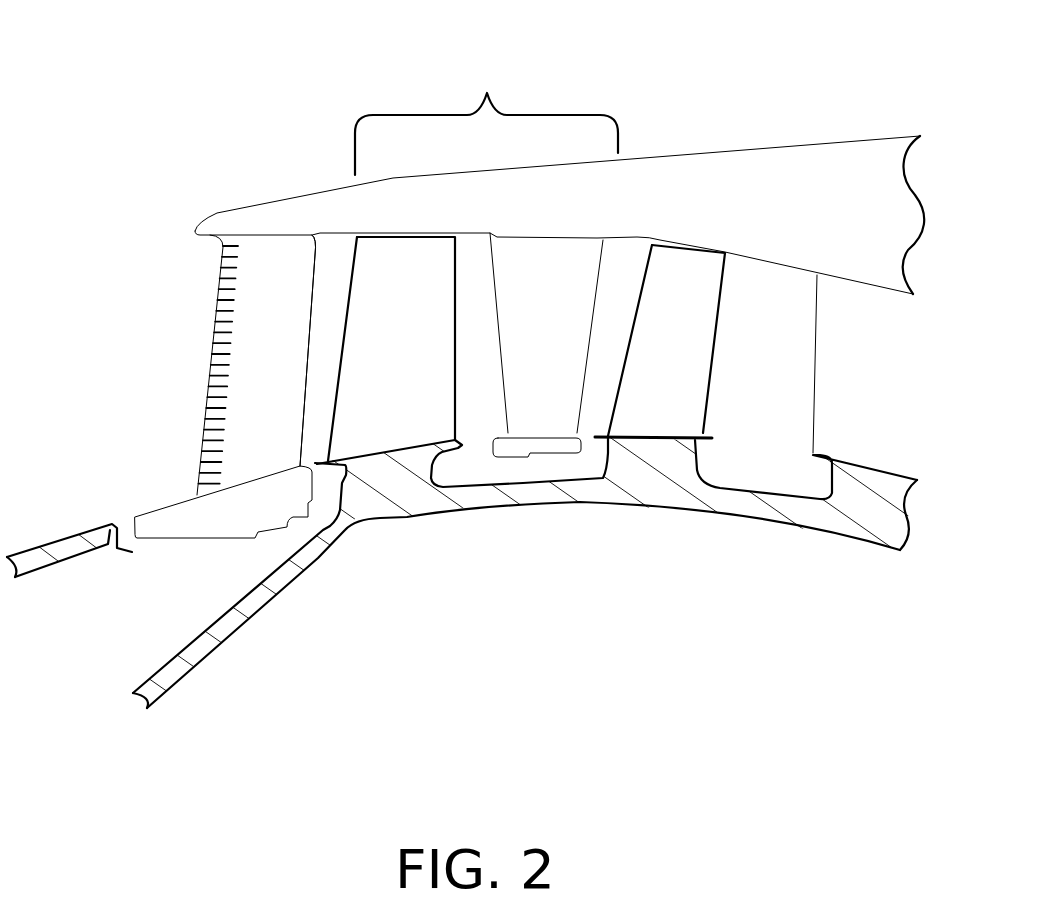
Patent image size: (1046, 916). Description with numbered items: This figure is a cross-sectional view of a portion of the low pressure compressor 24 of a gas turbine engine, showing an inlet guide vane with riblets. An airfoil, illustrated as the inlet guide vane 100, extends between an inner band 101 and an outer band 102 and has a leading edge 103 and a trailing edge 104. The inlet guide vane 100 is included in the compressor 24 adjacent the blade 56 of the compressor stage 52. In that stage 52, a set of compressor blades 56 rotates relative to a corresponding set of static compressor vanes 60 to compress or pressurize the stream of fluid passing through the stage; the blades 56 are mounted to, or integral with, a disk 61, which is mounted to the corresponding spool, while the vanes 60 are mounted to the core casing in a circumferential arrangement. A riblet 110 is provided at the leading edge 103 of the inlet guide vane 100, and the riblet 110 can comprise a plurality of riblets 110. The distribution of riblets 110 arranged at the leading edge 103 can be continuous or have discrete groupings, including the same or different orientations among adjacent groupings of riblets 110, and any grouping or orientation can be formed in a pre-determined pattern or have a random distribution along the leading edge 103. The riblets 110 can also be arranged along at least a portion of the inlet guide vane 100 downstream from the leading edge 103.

The low pressure compressor 24 is at (238, 28).
The compressor stage 52 is at (487, 93).
The compressor blades 56 is at (414, 298).
The static compressor vanes 60 is at (539, 301).
The disk 61 is at (533, 494).
The inlet guide vane 100 is at (247, 296).
The inner band 101 is at (177, 517).
The outer band 102 is at (255, 220).
The leading edge 103 is at (215, 293).
The trailing edge 104 is at (312, 287).
The riblet 110 is at (165, 344).